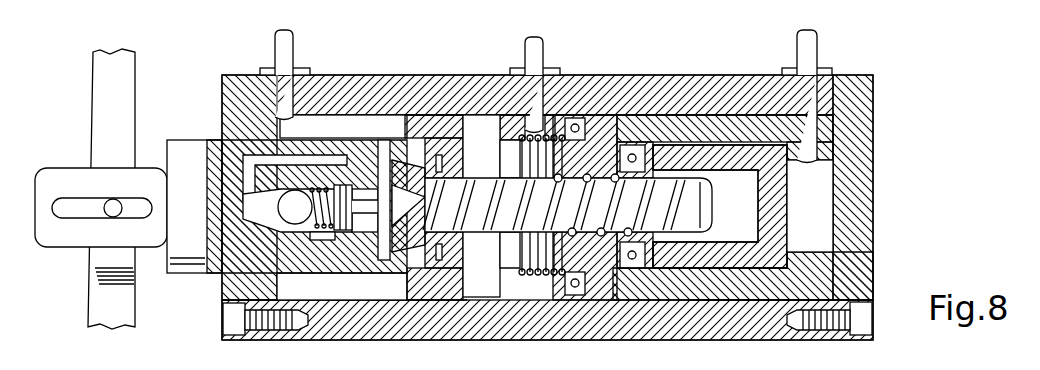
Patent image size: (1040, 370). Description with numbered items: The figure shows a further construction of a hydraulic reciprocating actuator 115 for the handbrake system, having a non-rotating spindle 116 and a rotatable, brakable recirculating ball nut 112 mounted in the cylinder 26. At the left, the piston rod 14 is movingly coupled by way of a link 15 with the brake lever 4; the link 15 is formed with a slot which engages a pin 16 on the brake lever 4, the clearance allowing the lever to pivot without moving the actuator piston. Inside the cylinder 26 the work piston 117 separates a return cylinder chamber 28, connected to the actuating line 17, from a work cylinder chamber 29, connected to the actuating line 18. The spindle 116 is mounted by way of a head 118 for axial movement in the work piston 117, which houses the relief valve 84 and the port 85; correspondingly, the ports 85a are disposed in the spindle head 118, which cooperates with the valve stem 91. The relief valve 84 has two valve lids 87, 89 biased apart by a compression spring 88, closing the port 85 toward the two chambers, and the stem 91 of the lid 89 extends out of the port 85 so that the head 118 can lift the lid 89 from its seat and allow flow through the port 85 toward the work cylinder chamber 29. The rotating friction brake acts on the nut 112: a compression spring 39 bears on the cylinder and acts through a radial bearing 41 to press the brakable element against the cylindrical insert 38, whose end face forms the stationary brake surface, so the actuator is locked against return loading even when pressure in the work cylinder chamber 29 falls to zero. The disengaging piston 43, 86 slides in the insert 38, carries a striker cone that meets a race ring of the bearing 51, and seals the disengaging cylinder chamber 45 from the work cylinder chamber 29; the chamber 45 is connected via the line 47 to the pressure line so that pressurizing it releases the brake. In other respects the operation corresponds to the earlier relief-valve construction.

The brake lever 4 is at (97, 305).
The link 15 is at (65, 236).
The pin 16 is at (111, 203).
The piston rod 14 is at (190, 257).
The actuating line 17 is at (288, 45).
The actuating line 18 is at (538, 52).
The line 47 is at (813, 52).
The cylinder 26 is at (388, 327).
The return cylinder chamber 28 is at (358, 297).
The work cylinder chamber 29 is at (473, 292).
The cylindrical insert 38 is at (758, 287).
The compression spring 39 is at (540, 280).
The radial bearing 41 is at (568, 293).
The disengaging piston 43 is at (703, 258).
The disengaging piston 86 is at (720, 206).
The disengaging cylinder chamber 45 is at (822, 193).
The bearing 51 is at (640, 277).
The relief valve 84 is at (337, 233).
The port 85 is at (312, 233).
The port 85a is at (391, 175).
The valve lid 87 is at (282, 208).
The compression spring 88 is at (322, 188).
The valve lid 89 is at (343, 185).
The stem 91 is at (383, 200).
The recirculating ball nut 112 is at (602, 283).
The reciprocating actuator 115 is at (917, 98).
The spindle 116 is at (480, 222).
The work piston 117 is at (444, 290).
The head 118 is at (382, 262).